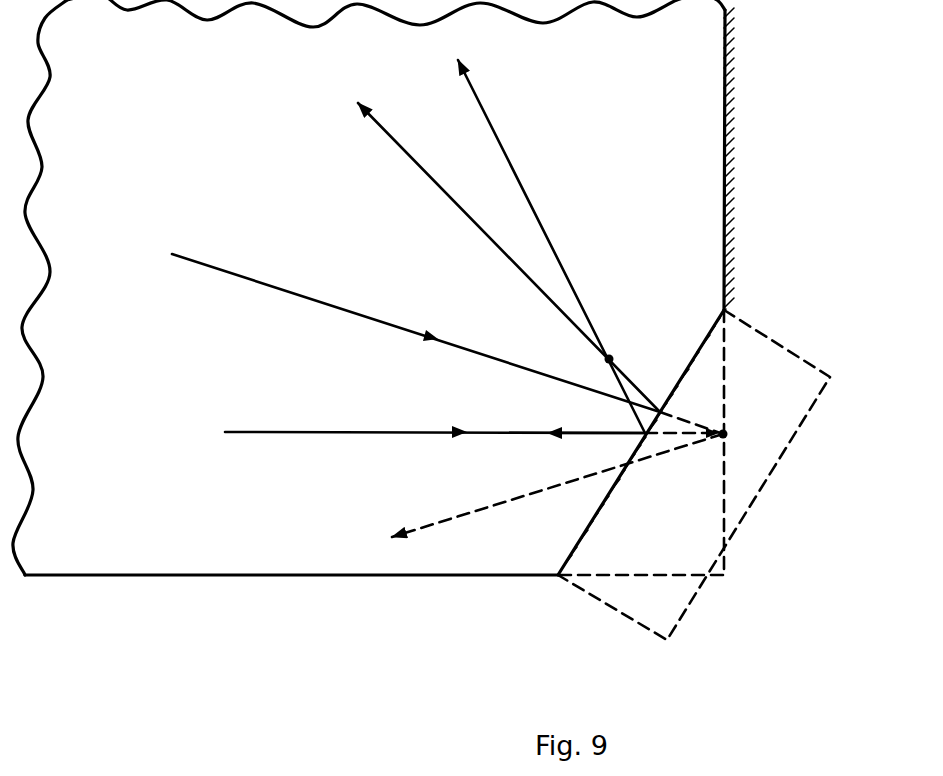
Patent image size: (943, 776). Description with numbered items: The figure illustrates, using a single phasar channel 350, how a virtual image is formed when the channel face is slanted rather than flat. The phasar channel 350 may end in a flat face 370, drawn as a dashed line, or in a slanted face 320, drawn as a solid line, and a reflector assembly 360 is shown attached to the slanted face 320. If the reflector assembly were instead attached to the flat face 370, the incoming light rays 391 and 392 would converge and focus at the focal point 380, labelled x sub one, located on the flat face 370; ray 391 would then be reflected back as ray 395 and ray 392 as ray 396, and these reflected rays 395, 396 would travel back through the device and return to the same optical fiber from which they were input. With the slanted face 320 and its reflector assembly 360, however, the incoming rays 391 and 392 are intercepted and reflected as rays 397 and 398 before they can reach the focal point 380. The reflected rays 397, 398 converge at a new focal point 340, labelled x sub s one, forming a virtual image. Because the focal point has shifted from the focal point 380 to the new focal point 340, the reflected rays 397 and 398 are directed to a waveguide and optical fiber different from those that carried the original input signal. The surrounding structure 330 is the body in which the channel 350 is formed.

The slanted face 320 is at (562, 540).
The device body 330 is at (300, 650).
The new focal point x_s1 340 is at (608, 342).
The phasar channel 350 is at (211, 558).
The reflector assembly 360 is at (782, 375).
The flat face 370 is at (733, 493).
The focal point x_1 380 is at (730, 445).
The incoming light ray 391 is at (435, 423).
The incoming light ray 392 is at (188, 270).
The reflected ray 395 is at (566, 440).
The reflected ray 396 is at (532, 485).
The reflected ray 397 is at (500, 105).
The reflected ray 398 is at (367, 127).